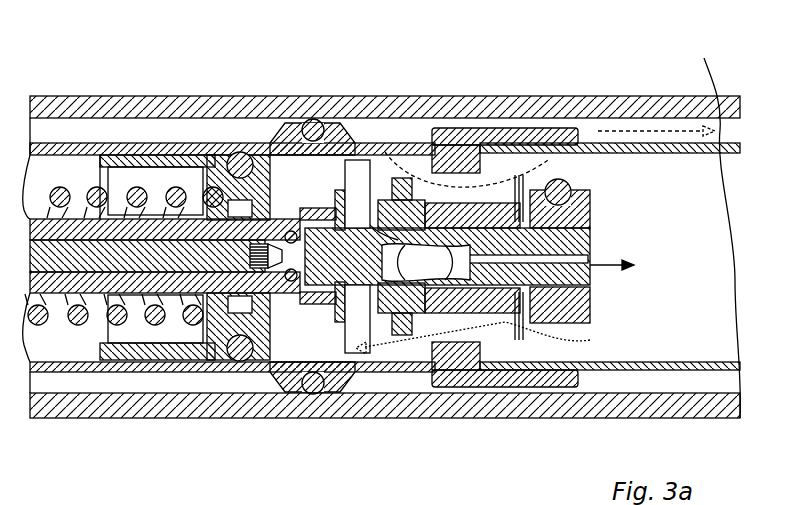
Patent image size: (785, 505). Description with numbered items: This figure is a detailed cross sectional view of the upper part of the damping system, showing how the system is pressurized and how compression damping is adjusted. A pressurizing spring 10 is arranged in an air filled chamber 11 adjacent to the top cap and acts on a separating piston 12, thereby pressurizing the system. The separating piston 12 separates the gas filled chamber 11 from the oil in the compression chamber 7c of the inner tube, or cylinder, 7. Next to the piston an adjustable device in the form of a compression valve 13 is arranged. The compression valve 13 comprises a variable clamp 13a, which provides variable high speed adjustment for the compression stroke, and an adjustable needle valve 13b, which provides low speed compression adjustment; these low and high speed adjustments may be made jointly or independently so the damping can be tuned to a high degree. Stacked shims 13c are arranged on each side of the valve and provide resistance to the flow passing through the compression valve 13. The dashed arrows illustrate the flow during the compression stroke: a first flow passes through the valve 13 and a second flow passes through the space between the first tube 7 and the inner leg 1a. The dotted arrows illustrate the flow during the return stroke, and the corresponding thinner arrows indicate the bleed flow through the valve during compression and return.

The spring 10 is at (68, 96).
The inner leg 1a is at (210, 420).
The inner tube 7 is at (610, 225).
The compression chamber 7c is at (638, 180).
The air filled chamber 11 is at (65, 337).
The separating piston 12 is at (217, 163).
The compression valve 13 is at (390, 195).
The adjustable clamp 13a is at (398, 277).
The adjustable needle valve 13b is at (327, 258).
The shim stack 13c is at (427, 173).